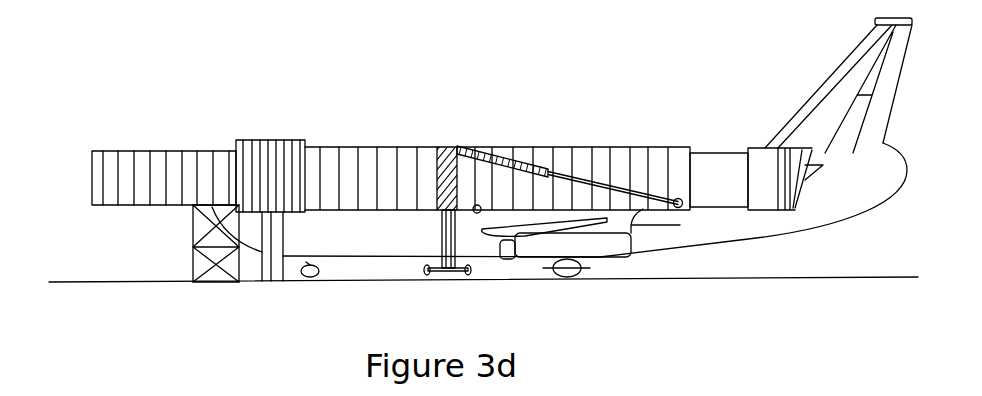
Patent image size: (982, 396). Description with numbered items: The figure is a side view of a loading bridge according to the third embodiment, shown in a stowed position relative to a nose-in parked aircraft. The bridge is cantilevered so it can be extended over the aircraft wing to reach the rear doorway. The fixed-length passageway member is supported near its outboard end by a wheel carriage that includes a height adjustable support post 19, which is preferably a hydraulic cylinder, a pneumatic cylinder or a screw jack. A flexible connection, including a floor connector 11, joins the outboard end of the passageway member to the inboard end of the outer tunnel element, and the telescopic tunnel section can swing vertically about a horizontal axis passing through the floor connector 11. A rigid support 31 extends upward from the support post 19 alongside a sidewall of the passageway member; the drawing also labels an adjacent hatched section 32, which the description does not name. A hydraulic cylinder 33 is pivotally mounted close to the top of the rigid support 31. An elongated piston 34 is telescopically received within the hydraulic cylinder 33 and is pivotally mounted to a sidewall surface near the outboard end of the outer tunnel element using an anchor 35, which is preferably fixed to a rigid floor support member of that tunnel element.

The floor connector 11 is at (480, 206).
The height adjustable support post 19 is at (437, 245).
The rigid support 31 is at (437, 177).
The hinge section 32 is at (443, 146).
The hydraulic cylinder 33 is at (497, 150).
The elongated piston 34 is at (558, 160).
The anchor 35 is at (679, 208).